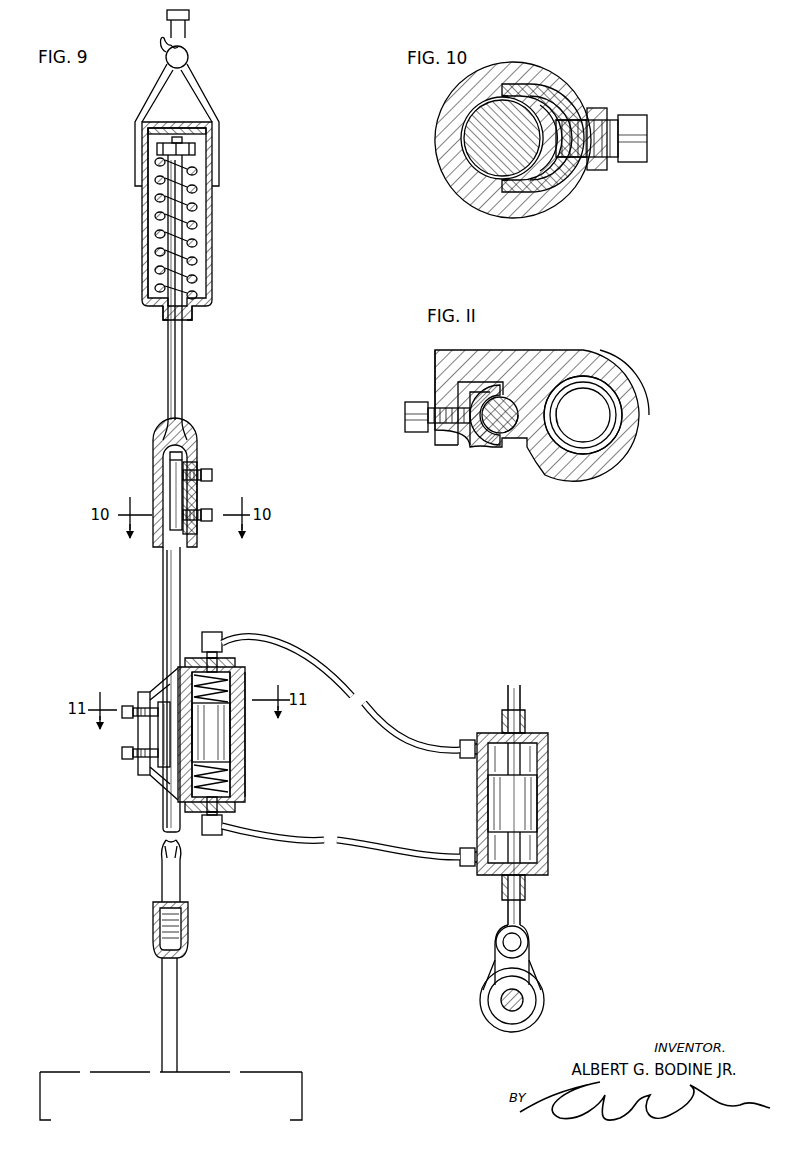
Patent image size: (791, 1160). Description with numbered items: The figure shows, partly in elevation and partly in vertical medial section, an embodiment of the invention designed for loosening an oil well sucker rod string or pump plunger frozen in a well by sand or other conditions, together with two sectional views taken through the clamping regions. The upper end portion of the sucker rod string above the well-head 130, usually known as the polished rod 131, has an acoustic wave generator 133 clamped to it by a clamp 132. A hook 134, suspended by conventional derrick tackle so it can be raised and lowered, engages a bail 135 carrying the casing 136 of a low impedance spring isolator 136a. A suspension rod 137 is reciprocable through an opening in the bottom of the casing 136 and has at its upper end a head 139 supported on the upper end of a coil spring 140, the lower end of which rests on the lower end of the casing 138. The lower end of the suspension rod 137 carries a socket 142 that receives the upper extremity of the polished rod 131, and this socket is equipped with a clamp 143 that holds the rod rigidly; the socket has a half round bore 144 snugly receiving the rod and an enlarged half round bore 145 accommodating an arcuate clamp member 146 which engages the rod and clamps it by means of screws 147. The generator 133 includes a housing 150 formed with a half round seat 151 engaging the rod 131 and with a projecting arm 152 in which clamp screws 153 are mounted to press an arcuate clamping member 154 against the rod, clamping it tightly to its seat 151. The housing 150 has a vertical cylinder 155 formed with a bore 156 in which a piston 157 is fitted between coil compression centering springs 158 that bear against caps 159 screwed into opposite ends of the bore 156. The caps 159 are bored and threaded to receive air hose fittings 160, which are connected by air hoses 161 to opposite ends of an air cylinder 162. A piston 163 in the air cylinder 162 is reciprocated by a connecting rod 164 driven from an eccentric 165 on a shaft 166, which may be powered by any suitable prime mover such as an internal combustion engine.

In FIG. 9, the well-head 130 is at (290, 1072).
In FIG. 9, the polished rod 131 is at (163, 598).
In FIG. 10, the polished rod 131 is at (466, 165).
In FIG. 11, the polished rod 131 is at (498, 436).
In FIG. 9, the clamp 132 is at (152, 783).
In FIG. 11, the clamp 132 is at (437, 353).
In FIG. 9, the acoustic wave generator 133 is at (252, 672).
In FIG. 11, the acoustic wave generator 133 is at (643, 452).
In FIG. 9, the hook 134 is at (190, 44).
In FIG. 9, the bail 135 is at (213, 106).
In FIG. 9, the casing 136 is at (213, 238).
In FIG. 9, the low impedance spring isolator 136a is at (142, 245).
In FIG. 9, the suspension rod 137 is at (183, 370).
In FIG. 9, the casing lower end 138 is at (192, 318).
In FIG. 9, the head 139 is at (196, 149).
In FIG. 9, the coil spring 140 is at (197, 191).
In FIG. 9, the socket 142 is at (155, 452).
In FIG. 10, the socket 142 is at (446, 112).
In FIG. 9, the clamp 143 is at (197, 456).
In FIG. 10, the clamp 143 is at (540, 84).
In FIG. 9, the half round bore 144 is at (178, 488).
In FIG. 10, the half round bore 144 is at (487, 196).
In FIG. 10, the enlarged half round bore 145 is at (566, 180).
In FIG. 9, the arcuate clamp member 146 is at (183, 484).
In FIG. 10, the arcuate clamp member 146 is at (531, 197).
In FIG. 9, the screws 147 is at (207, 508).
In FIG. 10, the screws 147 is at (631, 117).
In FIG. 9, the housing 150 is at (245, 722).
In FIG. 11, the housing 150 is at (556, 351).
In FIG. 11, the half round seat 151 is at (514, 436).
In FIG. 9, the projecting arm 152 is at (140, 736).
In FIG. 11, the projecting arm 152 is at (440, 381).
In FIG. 9, the clamp screws 153 is at (130, 760).
In FIG. 11, the clamp screws 153 is at (414, 426).
In FIG. 9, the arcuate clamping member 154 is at (158, 700).
In FIG. 11, the arcuate clamping member 154 is at (481, 440).
In FIG. 9, the vertical cylinder 155 is at (240, 746).
In FIG. 11, the vertical cylinder 155 is at (646, 412).
In FIG. 9, the bore 156 is at (237, 772).
In FIG. 11, the bore 156 is at (614, 392).
In FIG. 9, the piston 157 is at (232, 728).
In FIG. 9, the coil compression centering springs 158 is at (235, 690).
In FIG. 11, the coil compression centering springs 158 is at (581, 442).
In FIG. 9, the caps 159 is at (228, 660).
In FIG. 9, the air hose fittings 160 is at (216, 632).
In FIG. 9, the air hoses 161 is at (340, 680).
In FIG. 9, the air cylinder 162 is at (549, 778).
In FIG. 9, the piston 163 is at (532, 806).
In FIG. 9, the connecting rod 164 is at (508, 910).
In FIG. 9, the eccentric 165 is at (497, 990).
In FIG. 9, the shaft 166 is at (521, 996).